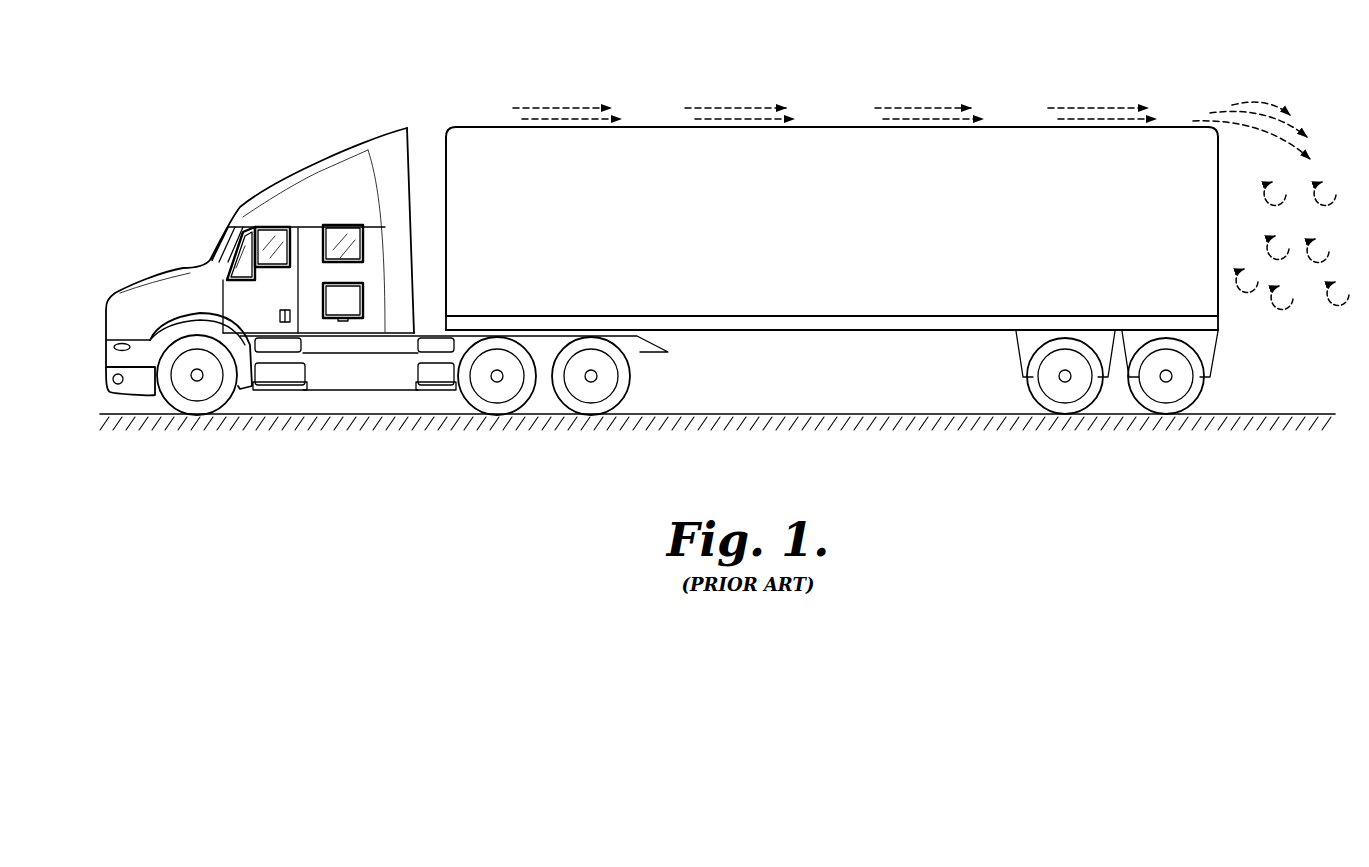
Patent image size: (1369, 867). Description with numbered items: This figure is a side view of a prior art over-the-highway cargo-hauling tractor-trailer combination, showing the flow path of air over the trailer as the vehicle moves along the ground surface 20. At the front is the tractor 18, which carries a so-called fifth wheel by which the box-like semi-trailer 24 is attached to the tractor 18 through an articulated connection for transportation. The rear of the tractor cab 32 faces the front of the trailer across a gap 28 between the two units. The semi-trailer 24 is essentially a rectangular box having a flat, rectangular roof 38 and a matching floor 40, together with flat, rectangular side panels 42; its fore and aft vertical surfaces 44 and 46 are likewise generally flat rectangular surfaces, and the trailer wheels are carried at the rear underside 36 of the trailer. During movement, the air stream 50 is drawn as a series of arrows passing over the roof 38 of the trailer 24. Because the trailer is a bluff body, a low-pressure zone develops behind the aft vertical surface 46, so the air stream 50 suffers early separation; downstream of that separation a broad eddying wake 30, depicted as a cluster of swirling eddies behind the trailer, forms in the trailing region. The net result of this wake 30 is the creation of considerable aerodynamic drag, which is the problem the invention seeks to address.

The tractor 18 is at (214, 157).
The ground surface 20 is at (147, 401).
The semi-trailer 24 is at (1022, 121).
The gap between tractor and trailer 28 is at (415, 235).
The wake 30 is at (1313, 313).
The rear of tractor cab 32 is at (411, 146).
The rear underside of trailer 36 is at (1228, 348).
The roof 38 is at (838, 127).
The floor 40 is at (968, 331).
The side panels 42 is at (765, 253).
The fore vertical surface 44 is at (444, 146).
The aft vertical surface 46 is at (1218, 250).
The air stream 50 is at (1130, 107).